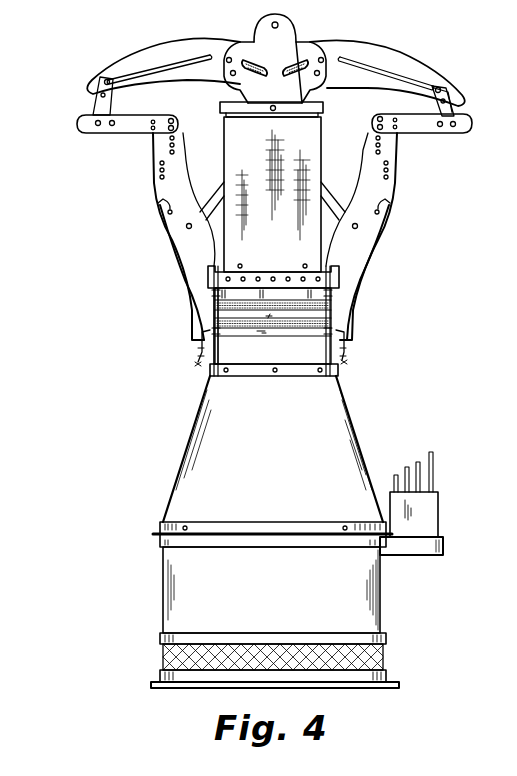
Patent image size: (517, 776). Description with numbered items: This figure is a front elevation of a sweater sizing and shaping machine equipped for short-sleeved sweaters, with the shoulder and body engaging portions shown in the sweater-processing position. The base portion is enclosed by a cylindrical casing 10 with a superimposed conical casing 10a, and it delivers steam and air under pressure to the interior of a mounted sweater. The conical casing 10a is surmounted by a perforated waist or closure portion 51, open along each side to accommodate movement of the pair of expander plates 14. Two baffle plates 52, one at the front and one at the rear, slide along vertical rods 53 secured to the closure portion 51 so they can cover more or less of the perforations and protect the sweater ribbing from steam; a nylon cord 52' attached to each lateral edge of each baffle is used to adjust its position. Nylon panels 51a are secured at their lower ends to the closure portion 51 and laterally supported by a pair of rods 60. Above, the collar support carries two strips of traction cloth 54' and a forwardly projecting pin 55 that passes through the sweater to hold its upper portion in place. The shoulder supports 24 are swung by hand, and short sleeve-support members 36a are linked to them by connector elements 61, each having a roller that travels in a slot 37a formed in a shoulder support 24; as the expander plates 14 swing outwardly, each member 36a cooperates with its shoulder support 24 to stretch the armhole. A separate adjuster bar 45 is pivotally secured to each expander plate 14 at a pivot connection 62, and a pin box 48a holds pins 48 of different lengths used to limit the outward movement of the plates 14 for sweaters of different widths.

The cylindrical casing 10 is at (382, 588).
The conical casing 10a is at (353, 435).
The expander plates 14 is at (170, 183).
The shoulder supports 24 is at (409, 55).
The sleeve-support members 36a is at (122, 134).
The slot 37a is at (426, 82).
The adjuster bar 45 is at (190, 306).
The pins 48 is at (442, 445).
The pin box 48a is at (438, 518).
The closure portion 51 is at (280, 272).
The nylon panels 51a is at (317, 137).
The baffle plates 52 is at (299, 321).
The nylon cord 52' is at (294, 348).
The rods 53 is at (220, 351).
The strips of traction cloth 54' is at (272, 57).
The pin 55 is at (277, 62).
The rods 60 is at (221, 108).
The connector elements 61 is at (95, 108).
The pivot connection 62 is at (160, 204).